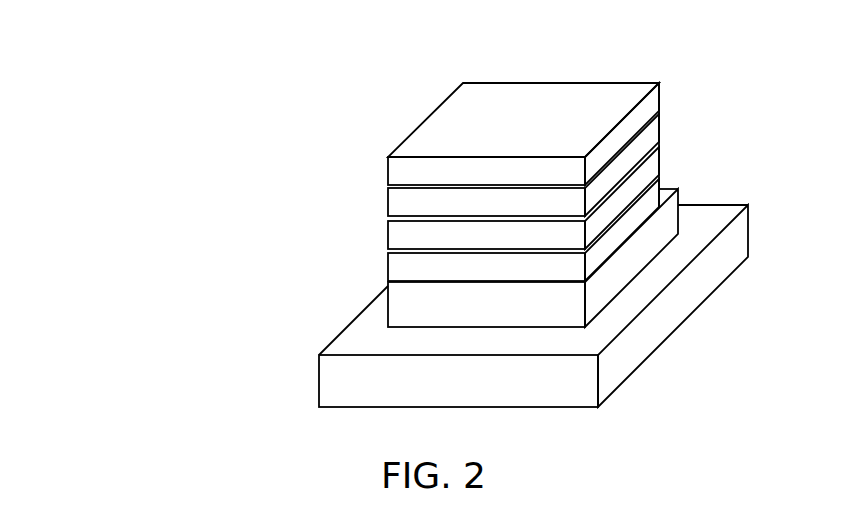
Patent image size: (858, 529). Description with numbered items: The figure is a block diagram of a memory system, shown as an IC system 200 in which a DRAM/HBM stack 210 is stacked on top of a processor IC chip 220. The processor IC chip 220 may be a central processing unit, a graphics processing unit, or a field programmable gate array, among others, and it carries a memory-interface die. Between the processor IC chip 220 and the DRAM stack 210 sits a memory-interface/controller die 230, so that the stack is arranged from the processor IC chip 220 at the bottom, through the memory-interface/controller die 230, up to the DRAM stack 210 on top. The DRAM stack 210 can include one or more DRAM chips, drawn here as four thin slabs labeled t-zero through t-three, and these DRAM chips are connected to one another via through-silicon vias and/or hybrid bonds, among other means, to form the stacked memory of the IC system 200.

The IC system 200 is at (186, 82).
The DRAM/HBM stack 210 is at (649, 280).
The processor IC chip 220 is at (433, 391).
The memory-interface/controller die 230 is at (463, 316).